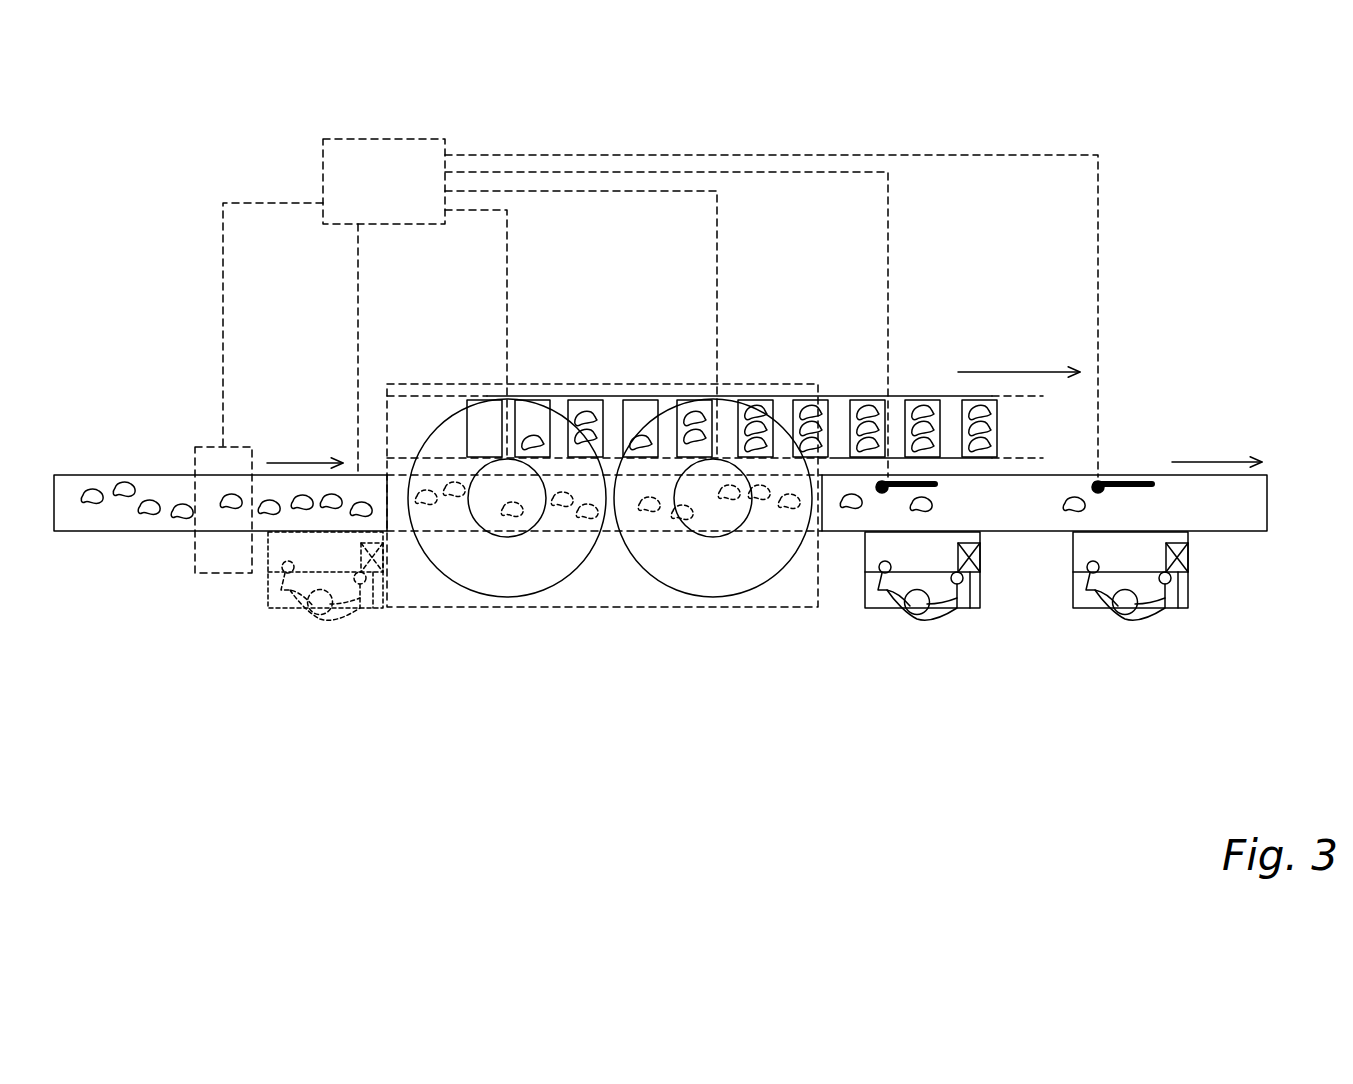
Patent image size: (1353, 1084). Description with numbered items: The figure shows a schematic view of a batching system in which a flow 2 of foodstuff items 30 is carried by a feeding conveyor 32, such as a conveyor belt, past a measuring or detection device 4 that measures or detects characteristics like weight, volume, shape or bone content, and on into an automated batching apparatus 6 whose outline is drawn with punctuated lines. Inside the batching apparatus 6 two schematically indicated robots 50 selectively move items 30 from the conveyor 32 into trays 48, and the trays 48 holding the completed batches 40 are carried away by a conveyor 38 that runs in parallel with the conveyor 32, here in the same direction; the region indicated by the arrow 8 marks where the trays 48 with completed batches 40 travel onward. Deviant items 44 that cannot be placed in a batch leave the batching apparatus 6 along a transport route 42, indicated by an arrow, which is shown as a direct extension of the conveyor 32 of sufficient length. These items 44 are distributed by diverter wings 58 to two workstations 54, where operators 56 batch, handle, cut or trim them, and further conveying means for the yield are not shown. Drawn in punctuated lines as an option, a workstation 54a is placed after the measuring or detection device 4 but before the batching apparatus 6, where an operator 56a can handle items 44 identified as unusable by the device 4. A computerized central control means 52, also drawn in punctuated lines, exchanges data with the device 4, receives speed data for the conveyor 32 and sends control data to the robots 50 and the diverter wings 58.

The flow of items 2 is at (168, 458).
The measuring or detection device 4 is at (227, 447).
The batching apparatus 6 is at (568, 384).
The outfeed section 8 is at (992, 340).
The items 30 is at (98, 490).
The feeding conveyor 32 is at (140, 473).
The conveyor 38 is at (913, 396).
The completed batches 40 is at (863, 386).
The transport route 42 is at (1200, 435).
The deviant items 44 is at (840, 500).
The trays 48 is at (855, 410).
The robots 50 is at (440, 412).
The central control means 52 is at (369, 196).
The workstations 54 is at (865, 557).
The operators 56 is at (902, 610).
The diverter wings 58 is at (935, 488).
The workstation 54a is at (262, 557).
The operator 56a is at (297, 607).